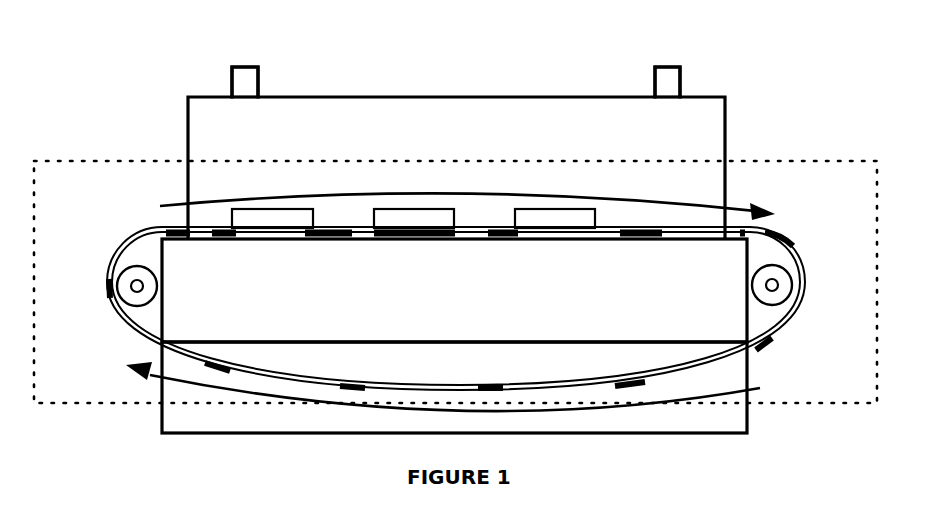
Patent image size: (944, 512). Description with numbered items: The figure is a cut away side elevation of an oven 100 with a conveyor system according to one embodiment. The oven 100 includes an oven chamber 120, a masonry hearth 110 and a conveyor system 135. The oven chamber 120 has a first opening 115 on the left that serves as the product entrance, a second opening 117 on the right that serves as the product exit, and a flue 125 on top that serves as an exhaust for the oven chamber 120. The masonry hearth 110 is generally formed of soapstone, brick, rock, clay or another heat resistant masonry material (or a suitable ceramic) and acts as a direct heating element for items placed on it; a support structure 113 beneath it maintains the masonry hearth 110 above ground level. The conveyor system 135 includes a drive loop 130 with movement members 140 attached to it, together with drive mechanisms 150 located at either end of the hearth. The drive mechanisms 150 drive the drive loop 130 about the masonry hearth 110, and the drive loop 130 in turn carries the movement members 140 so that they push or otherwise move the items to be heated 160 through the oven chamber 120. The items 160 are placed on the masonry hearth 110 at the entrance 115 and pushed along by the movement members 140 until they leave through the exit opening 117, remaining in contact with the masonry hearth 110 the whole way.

The oven 100 is at (128, 52).
The masonry hearth 110 is at (210, 274).
The support structure 113 is at (210, 422).
The first opening 115 is at (158, 137).
The second opening 117 is at (742, 137).
The oven chamber 120 is at (241, 129).
The flue 125 is at (248, 80).
The drive loop 130 is at (122, 241).
The conveyor system 135 is at (132, 390).
The movement members 140 is at (105, 297).
The drive mechanisms 150 is at (137, 300).
The items to be heated 160 is at (310, 214).